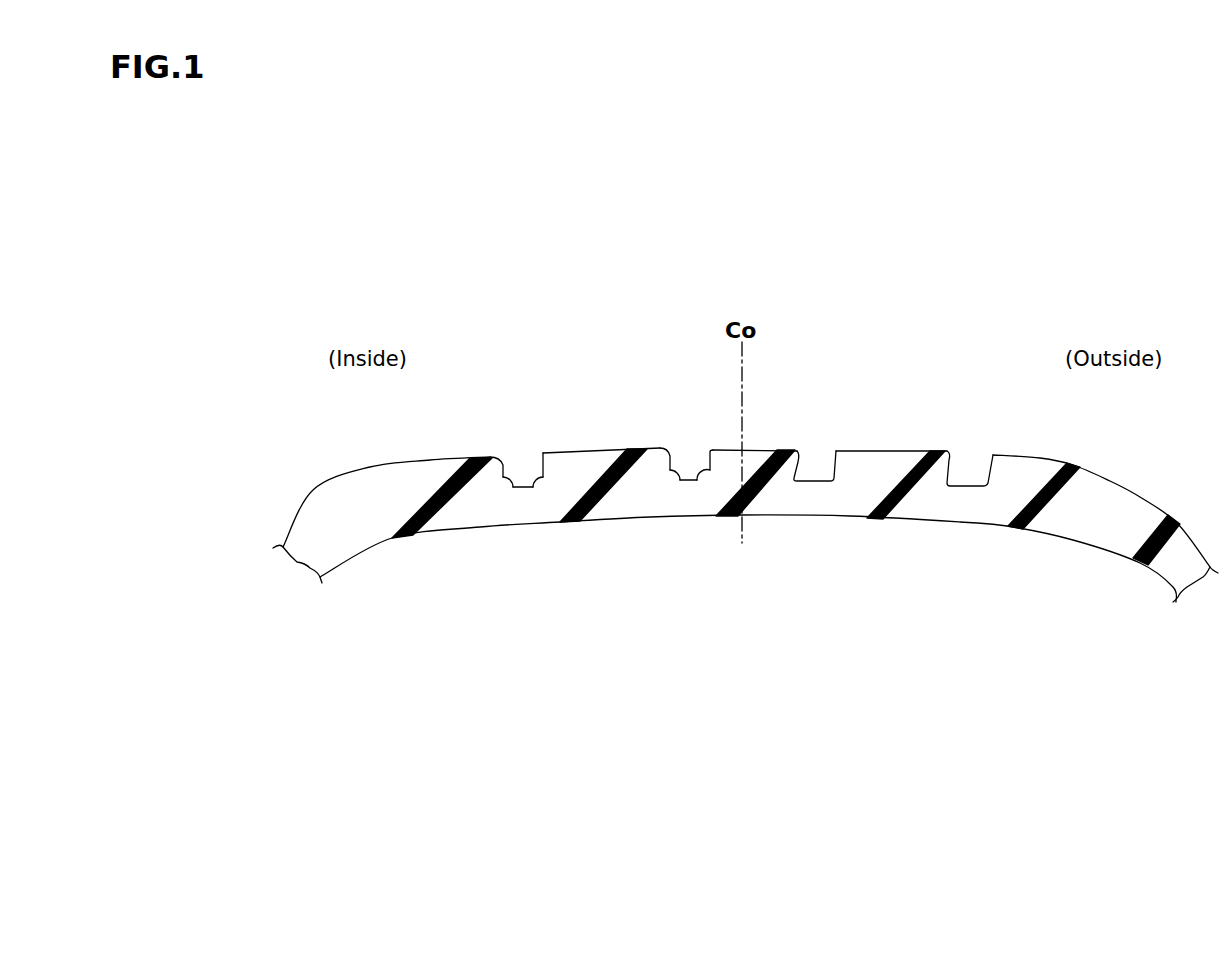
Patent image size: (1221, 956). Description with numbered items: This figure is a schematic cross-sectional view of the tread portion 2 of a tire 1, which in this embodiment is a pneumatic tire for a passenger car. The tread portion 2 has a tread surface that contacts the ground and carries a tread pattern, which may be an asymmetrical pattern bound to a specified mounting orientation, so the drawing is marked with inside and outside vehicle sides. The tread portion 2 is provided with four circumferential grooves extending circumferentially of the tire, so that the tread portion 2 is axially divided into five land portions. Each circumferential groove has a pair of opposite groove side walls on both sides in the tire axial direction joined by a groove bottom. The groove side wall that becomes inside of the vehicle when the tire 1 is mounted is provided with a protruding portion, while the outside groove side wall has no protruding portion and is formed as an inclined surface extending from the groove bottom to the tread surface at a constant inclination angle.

The tire 1 is at (935, 357).
The tread portion 2 is at (745, 486).